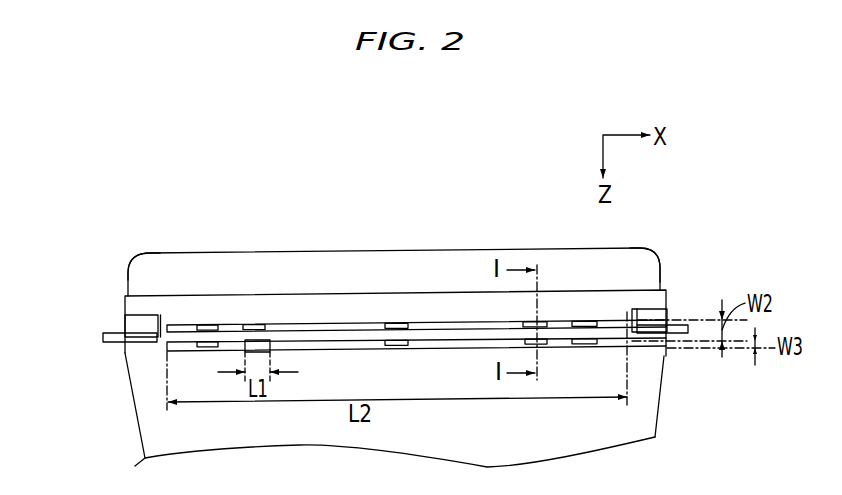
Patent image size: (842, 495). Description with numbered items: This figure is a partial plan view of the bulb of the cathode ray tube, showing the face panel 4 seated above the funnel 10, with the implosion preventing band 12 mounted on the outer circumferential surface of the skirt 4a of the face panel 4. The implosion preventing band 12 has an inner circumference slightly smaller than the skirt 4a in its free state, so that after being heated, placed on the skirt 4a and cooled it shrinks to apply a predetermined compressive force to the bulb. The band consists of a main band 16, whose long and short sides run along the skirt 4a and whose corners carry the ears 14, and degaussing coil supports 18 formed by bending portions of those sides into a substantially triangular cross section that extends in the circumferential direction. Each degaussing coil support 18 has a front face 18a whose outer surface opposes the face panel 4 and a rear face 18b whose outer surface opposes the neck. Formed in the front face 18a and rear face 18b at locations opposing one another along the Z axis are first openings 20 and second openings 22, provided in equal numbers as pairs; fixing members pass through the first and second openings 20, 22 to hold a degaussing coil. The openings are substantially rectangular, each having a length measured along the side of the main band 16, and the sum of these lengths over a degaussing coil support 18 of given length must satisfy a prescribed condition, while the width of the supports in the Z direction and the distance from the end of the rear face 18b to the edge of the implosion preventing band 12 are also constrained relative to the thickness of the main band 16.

The face panel 4 is at (447, 250).
The skirt 4a is at (137, 277).
The funnel 10 is at (655, 406).
The implosion preventing band 12 is at (647, 280).
The ears 14 is at (660, 327).
The main band 16 is at (217, 292).
The degaussing coil supports 18 is at (343, 369).
The front face 18a is at (162, 334).
The rear face 18b is at (170, 343).
The first openings 20 is at (398, 352).
The second openings 22 is at (398, 345).